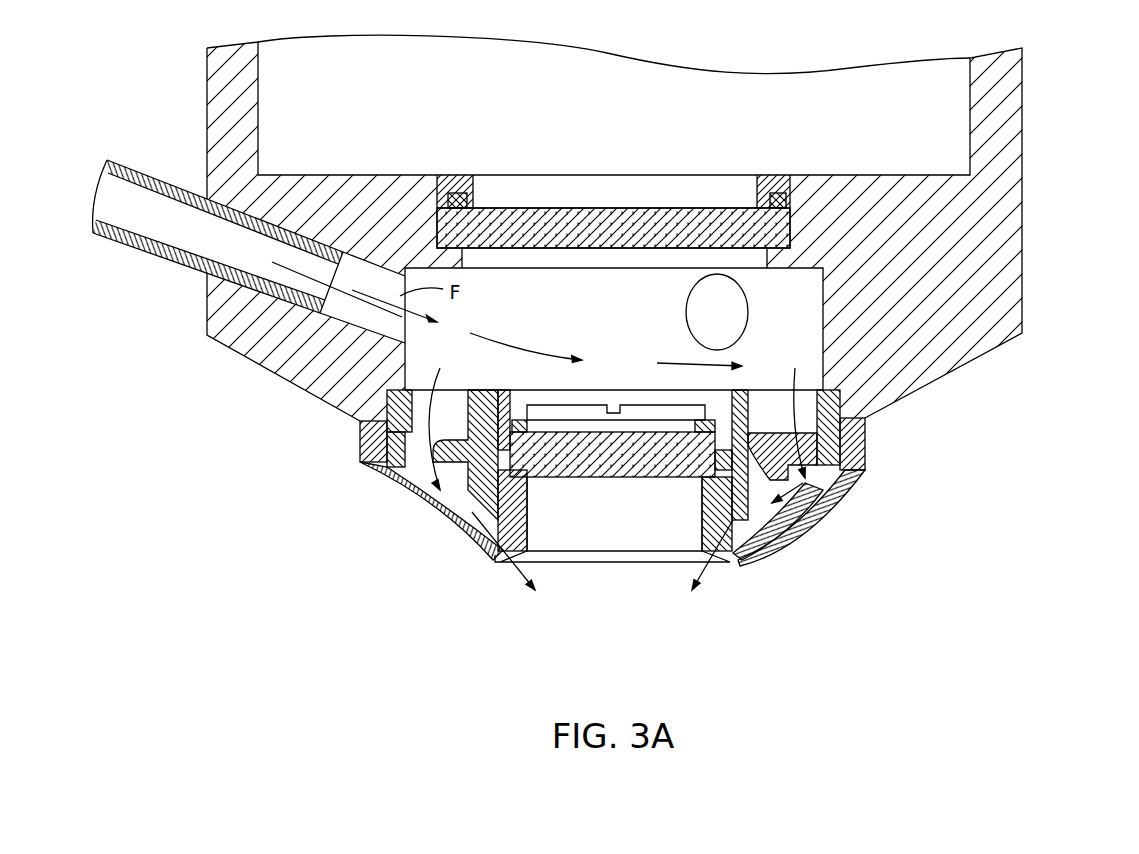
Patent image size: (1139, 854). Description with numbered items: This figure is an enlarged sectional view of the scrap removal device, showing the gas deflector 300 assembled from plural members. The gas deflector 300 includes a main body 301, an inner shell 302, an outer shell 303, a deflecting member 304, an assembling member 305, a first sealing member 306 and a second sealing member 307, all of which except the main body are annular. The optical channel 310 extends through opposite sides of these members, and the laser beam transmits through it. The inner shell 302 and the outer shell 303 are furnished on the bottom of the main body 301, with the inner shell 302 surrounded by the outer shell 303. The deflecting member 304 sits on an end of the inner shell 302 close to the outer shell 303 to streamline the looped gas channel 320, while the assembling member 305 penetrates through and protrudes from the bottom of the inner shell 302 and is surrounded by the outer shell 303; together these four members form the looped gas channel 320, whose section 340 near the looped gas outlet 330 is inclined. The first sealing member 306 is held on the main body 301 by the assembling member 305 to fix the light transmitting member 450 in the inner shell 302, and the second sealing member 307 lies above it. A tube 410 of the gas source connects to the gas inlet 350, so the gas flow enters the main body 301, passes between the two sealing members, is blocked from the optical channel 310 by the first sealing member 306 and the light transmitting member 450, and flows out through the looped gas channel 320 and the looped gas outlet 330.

The gas deflector 300 is at (1000, 416).
The main body 301 is at (1024, 303).
The inner shell 302 is at (853, 410).
The outer shell 303 is at (790, 510).
The deflecting member 304 is at (770, 447).
The assembling member 305 is at (522, 517).
The first sealing member 306 is at (630, 408).
The second sealing member 307 is at (585, 197).
The optical channel 310 is at (613, 169).
The looped gas channel 320 is at (830, 485).
The looped gas outlet 330 is at (665, 565).
The section of the looped gas channel 340 is at (735, 563).
The gas inlet 350 is at (357, 305).
The tube 410 is at (138, 243).
The light transmitting member 450 is at (587, 480).